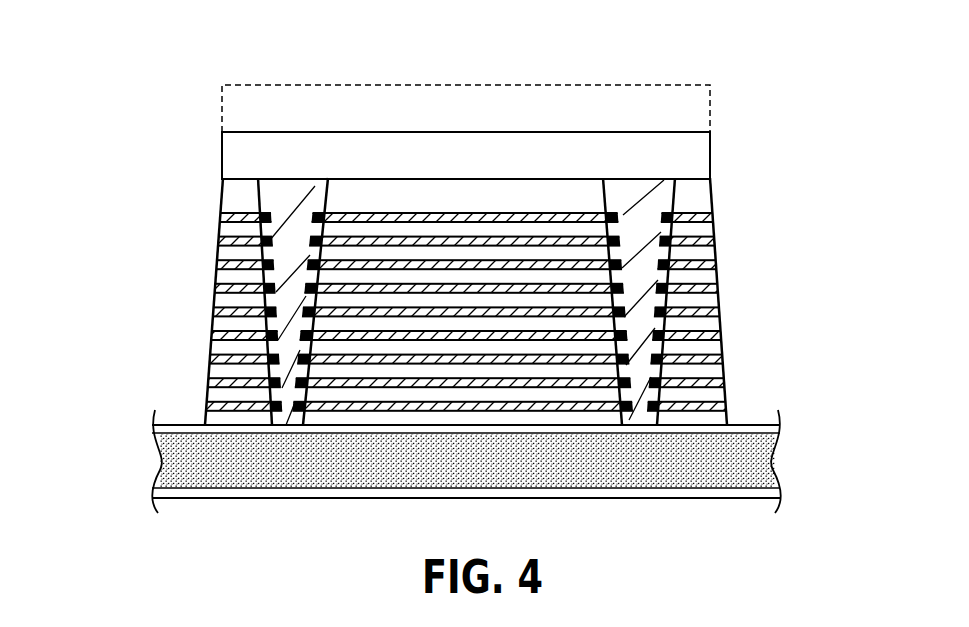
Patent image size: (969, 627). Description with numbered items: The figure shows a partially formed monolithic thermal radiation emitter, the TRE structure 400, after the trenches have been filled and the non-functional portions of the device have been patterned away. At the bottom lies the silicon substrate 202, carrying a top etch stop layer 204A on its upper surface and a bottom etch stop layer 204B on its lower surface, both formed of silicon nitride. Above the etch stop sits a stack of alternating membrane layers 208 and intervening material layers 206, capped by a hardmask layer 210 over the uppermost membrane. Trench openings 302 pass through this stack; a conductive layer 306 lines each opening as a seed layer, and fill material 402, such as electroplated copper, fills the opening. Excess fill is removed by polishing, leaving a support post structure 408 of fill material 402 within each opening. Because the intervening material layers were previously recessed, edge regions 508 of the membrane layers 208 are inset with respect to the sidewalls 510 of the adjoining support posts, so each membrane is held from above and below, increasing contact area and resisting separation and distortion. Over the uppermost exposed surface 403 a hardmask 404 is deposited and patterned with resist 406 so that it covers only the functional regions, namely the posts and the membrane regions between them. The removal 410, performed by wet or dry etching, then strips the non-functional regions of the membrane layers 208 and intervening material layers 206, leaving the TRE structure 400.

The TRE structure 400 is at (128, 190).
The silicon substrate 202 is at (456, 470).
The top etch stop layer 204A is at (780, 430).
The bottom etch stop layer 204B is at (780, 490).
The intervening material layer 206 is at (707, 328).
The membrane layer 208 is at (215, 357).
The hardmask layer 210 is at (458, 208).
The trench opening 302 is at (467, 302).
The conductive layer 306 is at (262, 186).
The fill material 402 is at (272, 256).
The uppermost exposed surface 403 is at (694, 184).
The hardmask 404 is at (455, 166).
The resist 406 is at (455, 120).
The support post structure 408 is at (292, 178).
The removal 410 is at (163, 163).
The edge region 508 is at (275, 203).
The sidewall 510 is at (266, 240).